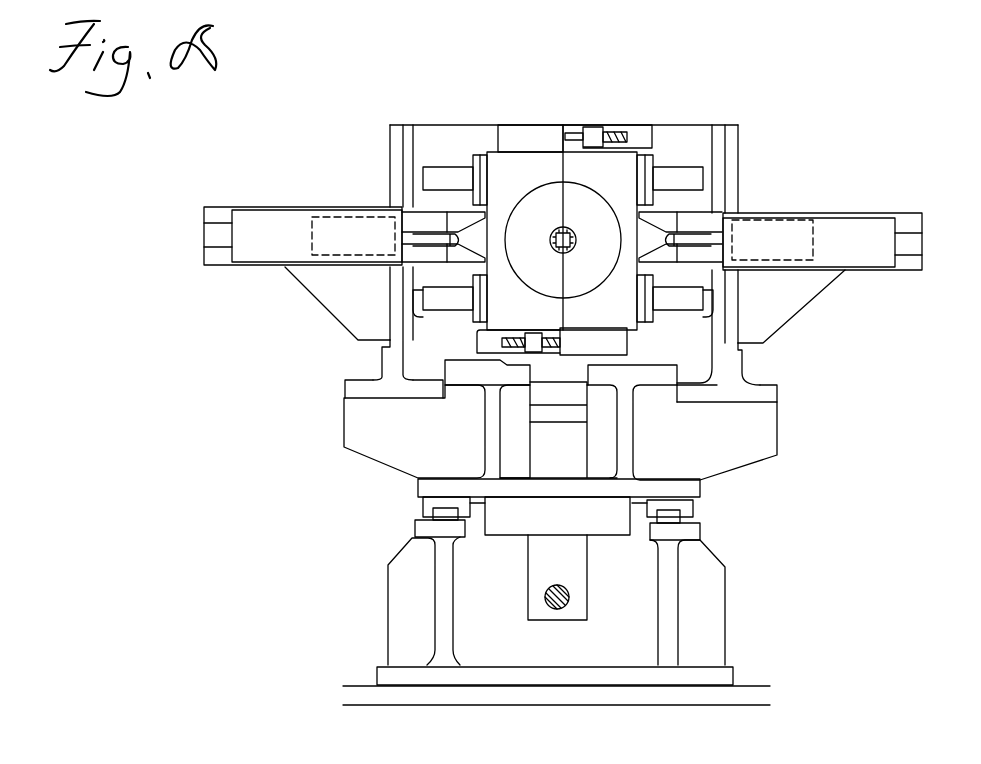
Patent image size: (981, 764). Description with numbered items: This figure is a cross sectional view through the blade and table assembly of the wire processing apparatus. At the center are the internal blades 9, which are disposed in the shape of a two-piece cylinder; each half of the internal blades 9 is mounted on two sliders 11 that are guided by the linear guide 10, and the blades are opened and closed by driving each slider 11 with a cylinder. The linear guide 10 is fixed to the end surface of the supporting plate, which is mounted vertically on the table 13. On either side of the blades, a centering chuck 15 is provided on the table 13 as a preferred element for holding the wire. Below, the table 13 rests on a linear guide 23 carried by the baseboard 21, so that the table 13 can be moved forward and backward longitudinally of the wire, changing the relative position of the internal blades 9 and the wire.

The internal blades 9 is at (572, 232).
The linear guide 10 is at (680, 177).
The slider 11 is at (507, 170).
The table 13 is at (772, 390).
The centering chuck 15 is at (418, 222).
The baseboard 21 is at (718, 680).
The linear guide 23 is at (680, 503).